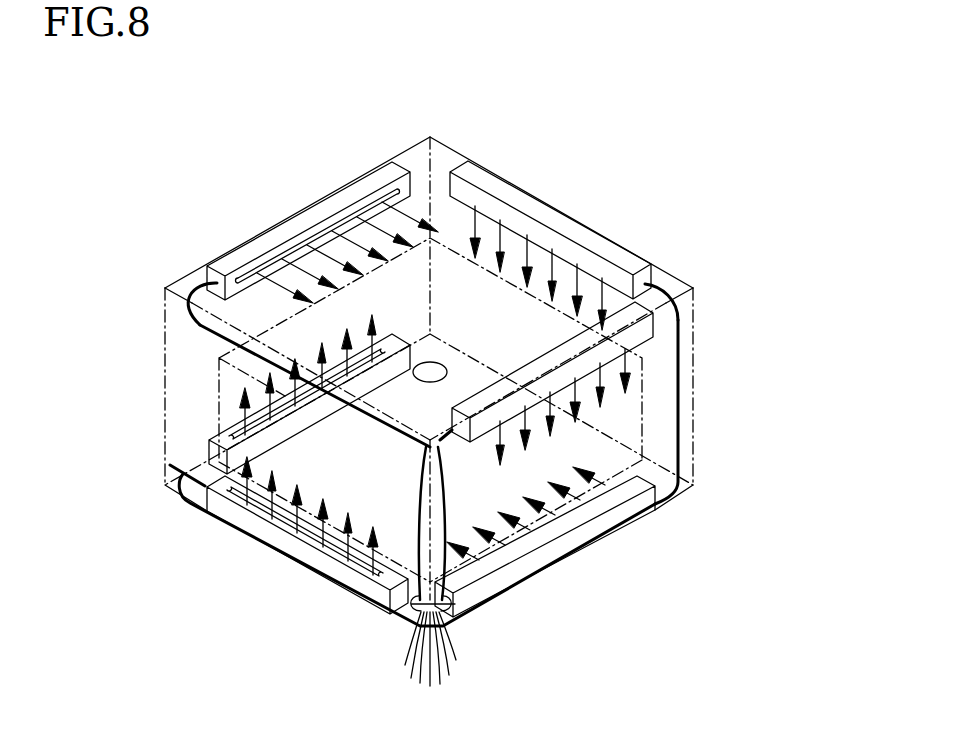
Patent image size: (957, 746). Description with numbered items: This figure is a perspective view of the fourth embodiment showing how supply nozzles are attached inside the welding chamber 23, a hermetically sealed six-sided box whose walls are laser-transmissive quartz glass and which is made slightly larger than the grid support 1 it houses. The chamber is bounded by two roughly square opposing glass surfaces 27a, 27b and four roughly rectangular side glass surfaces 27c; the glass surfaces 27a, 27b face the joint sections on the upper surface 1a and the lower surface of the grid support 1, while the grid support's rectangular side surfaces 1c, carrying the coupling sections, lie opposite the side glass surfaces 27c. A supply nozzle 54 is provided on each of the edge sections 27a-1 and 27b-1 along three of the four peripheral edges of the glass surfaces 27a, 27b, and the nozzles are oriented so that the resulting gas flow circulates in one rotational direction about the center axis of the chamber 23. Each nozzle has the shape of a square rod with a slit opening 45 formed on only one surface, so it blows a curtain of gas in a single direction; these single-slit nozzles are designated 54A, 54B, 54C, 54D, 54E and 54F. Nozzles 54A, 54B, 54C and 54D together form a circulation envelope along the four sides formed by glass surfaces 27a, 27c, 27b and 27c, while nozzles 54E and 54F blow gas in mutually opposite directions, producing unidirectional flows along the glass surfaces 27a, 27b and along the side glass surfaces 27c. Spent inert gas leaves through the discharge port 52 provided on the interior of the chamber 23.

The grid support 1 is at (471, 359).
The upper surface 1a is at (530, 236).
The side surfaces 1c is at (697, 444).
The chamber 23 is at (648, 281).
The glass surface 27a is at (445, 296).
The edge sections 27a-1 is at (190, 283).
The glass surface 27b is at (497, 583).
The edge sections 27b-1 is at (165, 490).
The side glass surfaces 27c is at (672, 397).
The slit opening 45 is at (327, 232).
The discharge port 52 is at (432, 364).
The supply nozzle 54 is at (281, 196).
The supply nozzle 54A is at (273, 233).
The supply nozzle 54B is at (668, 274).
The supply nozzle 54C is at (628, 513).
The supply nozzle 54D is at (217, 441).
The supply nozzle 54E is at (315, 557).
The supply nozzle 54F is at (596, 241).